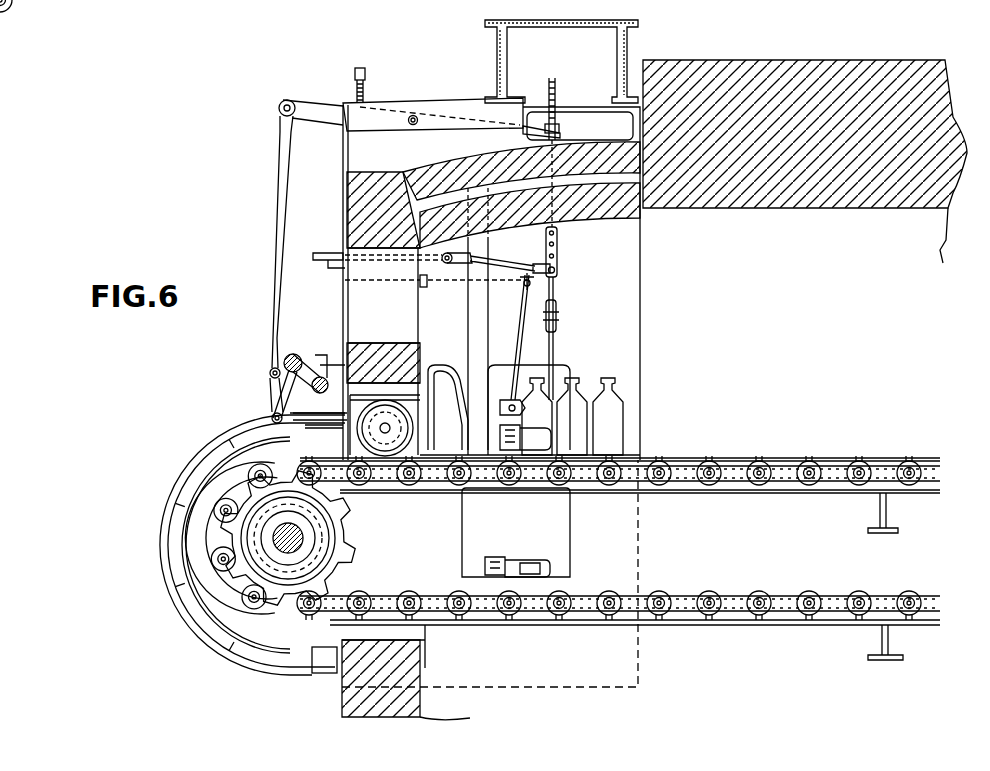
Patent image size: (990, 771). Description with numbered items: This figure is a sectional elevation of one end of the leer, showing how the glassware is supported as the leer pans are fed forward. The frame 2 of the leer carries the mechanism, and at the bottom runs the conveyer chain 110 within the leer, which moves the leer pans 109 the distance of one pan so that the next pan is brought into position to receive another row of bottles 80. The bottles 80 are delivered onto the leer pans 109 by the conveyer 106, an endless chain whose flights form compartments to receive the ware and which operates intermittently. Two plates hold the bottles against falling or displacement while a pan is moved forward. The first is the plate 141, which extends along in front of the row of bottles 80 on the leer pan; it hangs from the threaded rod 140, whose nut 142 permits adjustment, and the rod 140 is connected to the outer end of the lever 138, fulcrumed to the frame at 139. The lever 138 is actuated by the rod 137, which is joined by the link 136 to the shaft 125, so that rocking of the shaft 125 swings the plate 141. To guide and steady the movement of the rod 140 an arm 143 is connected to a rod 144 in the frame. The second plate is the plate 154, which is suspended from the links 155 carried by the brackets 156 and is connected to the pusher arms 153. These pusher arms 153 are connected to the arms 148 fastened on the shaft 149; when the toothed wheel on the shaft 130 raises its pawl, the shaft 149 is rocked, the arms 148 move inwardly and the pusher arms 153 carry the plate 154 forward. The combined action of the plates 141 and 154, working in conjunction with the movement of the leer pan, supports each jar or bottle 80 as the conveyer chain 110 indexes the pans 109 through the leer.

The frame 2 is at (355, 222).
The bottle 80 is at (607, 405).
The conveyer 106 is at (500, 566).
The leer pan 109 is at (690, 463).
The conveyer chain 110 is at (738, 478).
The shaft 125 is at (320, 375).
The shaft 130 is at (290, 548).
The link 136 is at (278, 397).
The rod 137 is at (283, 212).
The lever 138 is at (318, 110).
The fulcrum 139 is at (413, 115).
The rod 140 is at (554, 100).
The plate 141 is at (553, 343).
The nut 142 is at (559, 128).
The arm 143 is at (513, 258).
The rod 144 is at (444, 263).
The arm 148 is at (272, 410).
The shaft 149 is at (287, 356).
The pusher arm 153 is at (319, 409).
The plate 154 is at (530, 415).
The link 155 is at (522, 350).
The bracket 156 is at (533, 289).